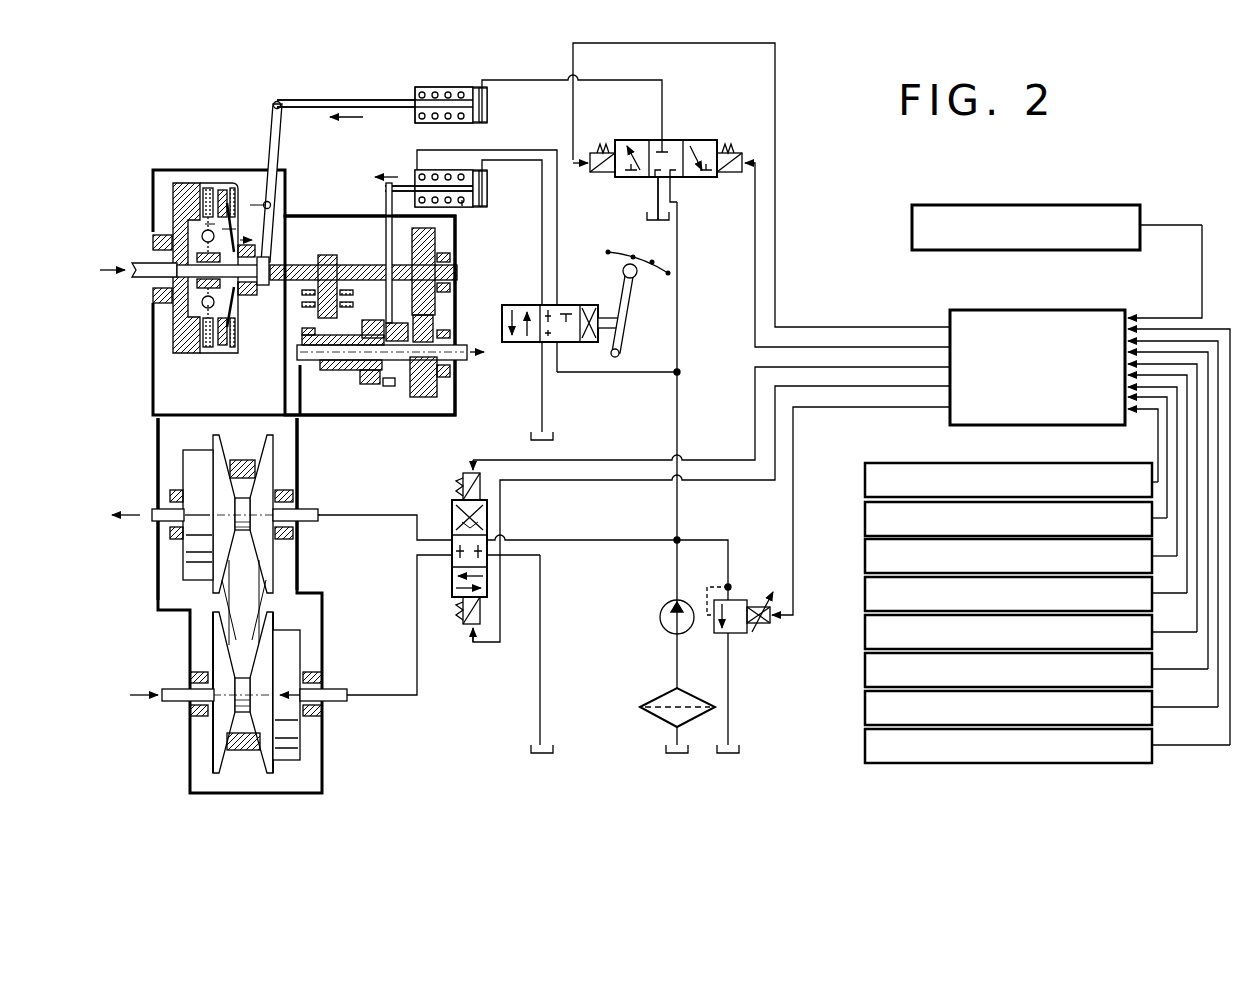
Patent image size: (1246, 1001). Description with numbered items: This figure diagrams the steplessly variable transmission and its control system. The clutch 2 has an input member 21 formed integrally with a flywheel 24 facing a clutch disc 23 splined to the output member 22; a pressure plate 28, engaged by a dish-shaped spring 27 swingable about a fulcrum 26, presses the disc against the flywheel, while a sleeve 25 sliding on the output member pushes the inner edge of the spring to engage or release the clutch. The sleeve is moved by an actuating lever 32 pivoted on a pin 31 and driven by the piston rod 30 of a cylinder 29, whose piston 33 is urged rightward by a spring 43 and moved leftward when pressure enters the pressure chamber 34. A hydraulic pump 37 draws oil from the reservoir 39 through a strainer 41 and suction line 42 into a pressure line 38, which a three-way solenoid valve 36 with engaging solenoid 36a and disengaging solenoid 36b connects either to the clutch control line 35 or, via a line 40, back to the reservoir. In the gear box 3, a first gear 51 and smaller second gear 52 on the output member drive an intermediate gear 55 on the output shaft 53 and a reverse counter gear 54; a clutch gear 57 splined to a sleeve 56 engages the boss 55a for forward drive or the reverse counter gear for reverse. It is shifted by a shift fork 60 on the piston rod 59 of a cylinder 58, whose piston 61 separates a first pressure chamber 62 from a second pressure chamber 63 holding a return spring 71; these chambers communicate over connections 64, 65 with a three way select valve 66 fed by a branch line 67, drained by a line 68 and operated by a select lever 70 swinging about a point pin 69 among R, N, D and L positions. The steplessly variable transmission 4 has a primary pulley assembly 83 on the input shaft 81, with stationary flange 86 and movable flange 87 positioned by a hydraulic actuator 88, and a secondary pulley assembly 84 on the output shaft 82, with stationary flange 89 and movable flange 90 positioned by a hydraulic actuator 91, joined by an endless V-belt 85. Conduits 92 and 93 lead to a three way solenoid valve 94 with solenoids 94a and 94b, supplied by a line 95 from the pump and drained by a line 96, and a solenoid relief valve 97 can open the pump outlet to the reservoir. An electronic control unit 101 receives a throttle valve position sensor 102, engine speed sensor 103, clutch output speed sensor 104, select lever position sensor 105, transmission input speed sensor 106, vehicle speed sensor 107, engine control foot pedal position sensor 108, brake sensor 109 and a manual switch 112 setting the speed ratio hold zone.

The clutch 2 is at (148, 168).
The gear box 3 is at (455, 312).
The steplessly variable transmission 4 is at (152, 612).
The input member 21 is at (143, 280).
The output member 22 is at (285, 265).
The clutch disc 23 is at (207, 188).
The flywheel 24 is at (185, 183).
The sleeve 25 is at (240, 290).
The fulcrum 26 is at (233, 188).
The dish-shaped spring 27 is at (232, 210).
The pressure plate 28 is at (222, 190).
The cylinder 29 is at (455, 84).
The piston rod 30 is at (345, 100).
The pin 31 is at (270, 205).
The actuating lever 32 is at (274, 150).
The piston 33 is at (482, 122).
The pressure chamber 34 is at (488, 106).
The clutch control line 35 is at (640, 80).
The three-way solenoid valve 36 is at (692, 185).
The engaging solenoid 36a is at (590, 150).
The disengaging solenoid 36b is at (738, 148).
The hydraulic pump 37 is at (660, 620).
The pressure line 38 is at (679, 325).
The reservoir 39 is at (645, 215).
The line 40 is at (650, 193).
The strainer 41 is at (645, 709).
The suction line 42 is at (677, 655).
The spring 43 is at (430, 87).
The first gear 51 is at (450, 255).
The second gear 52 is at (330, 258).
The output shaft 53 is at (460, 360).
The reverse counter gear 54 is at (320, 340).
The intermediate gear 55 is at (420, 397).
The boss 55a is at (390, 386).
The sleeve 56 is at (338, 370).
The clutch gear 57 is at (368, 384).
The cylinder 58 is at (490, 207).
The piston rod 59 is at (405, 186).
The shift fork 60 is at (386, 200).
The piston 61 is at (488, 180).
The first pressure chamber 62 is at (482, 200).
The second pressure chamber 63 is at (455, 177).
The manual valve 64 is at (540, 275).
The hydraulic line 65 is at (558, 270).
The three way select valve 66 is at (540, 355).
The branch line 67 is at (640, 372).
The line 68 is at (542, 410).
The point pin 69 is at (619, 353).
The select lever 70 is at (626, 305).
The return spring 71 is at (462, 206).
The input shaft 81 is at (170, 700).
The output shaft 82 is at (155, 522).
The primary pulley assembly 83 is at (205, 733).
The secondary pulley assembly 84 is at (275, 478).
The endless V-belt 85 is at (248, 608).
The stationary flange 86 is at (213, 773).
The movable flange 87 is at (273, 773).
The hydraulic actuator 88 is at (295, 735).
The stationary flange 89 is at (262, 568).
The movable flange 90 is at (218, 435).
The hydraulic actuator 91 is at (185, 460).
The conduit 92 is at (417, 695).
The conduit 93 is at (378, 513).
The three way solenoid valve 94 is at (492, 527).
The solenoid 94a is at (463, 485).
The solenoid 94b is at (465, 630).
The line 95 is at (615, 543).
The line 96 is at (542, 670).
The relief valve 97 is at (738, 633).
The electronic control unit 101 is at (1118, 310).
The throttle valve position sensor 102 is at (865, 482).
The engine speed sensor 103 is at (865, 520).
The clutch output speed sensor 104 is at (865, 558).
The select lever position sensor 105 is at (865, 596).
The transmission input speed sensor 106 is at (865, 634).
The vehicle speed sensor 107 is at (865, 672).
The engine control foot pedal position sensor 108 is at (865, 710).
The brake sensor 109 is at (865, 748).
The manual switch 112 is at (925, 250).